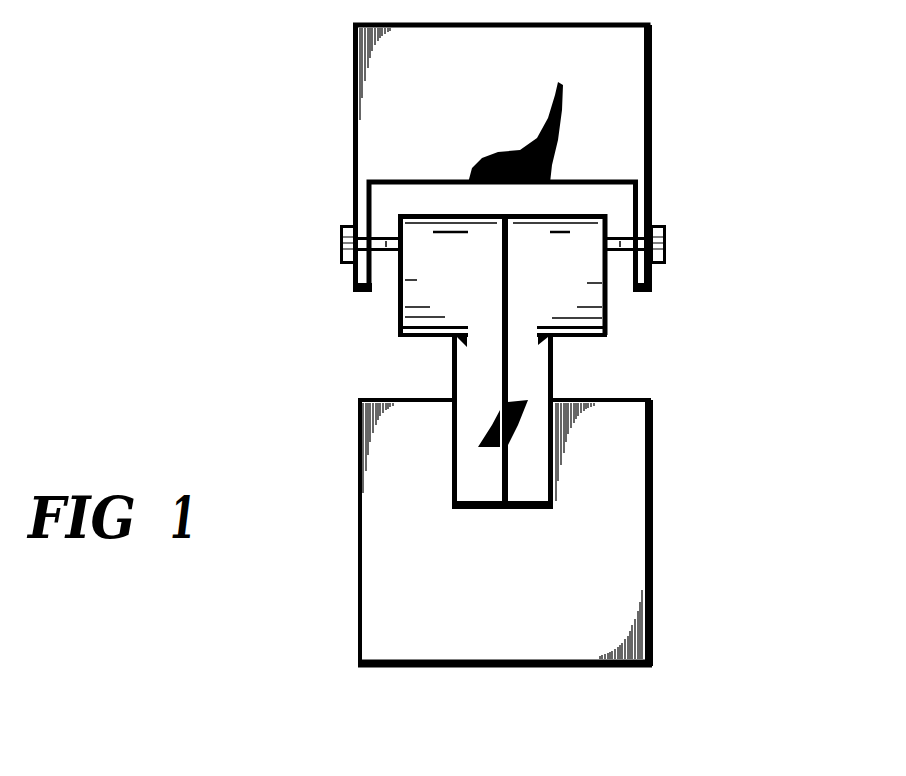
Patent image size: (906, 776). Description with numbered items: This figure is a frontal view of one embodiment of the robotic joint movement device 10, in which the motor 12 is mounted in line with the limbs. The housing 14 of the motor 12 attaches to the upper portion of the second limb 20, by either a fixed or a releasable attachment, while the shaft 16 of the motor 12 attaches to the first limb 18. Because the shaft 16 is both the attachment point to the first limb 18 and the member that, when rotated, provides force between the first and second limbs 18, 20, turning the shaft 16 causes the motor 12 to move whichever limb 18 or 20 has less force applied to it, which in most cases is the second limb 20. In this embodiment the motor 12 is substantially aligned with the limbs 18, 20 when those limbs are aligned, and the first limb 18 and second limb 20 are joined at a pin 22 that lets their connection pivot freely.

The robotic joint movement device 10 is at (790, 292).
The motor 12 is at (558, 376).
The housing 14 is at (541, 362).
The shaft 16 is at (389, 250).
The first limb 18 is at (630, 111).
The second limb 20 is at (635, 536).
The pin 22 is at (615, 253).